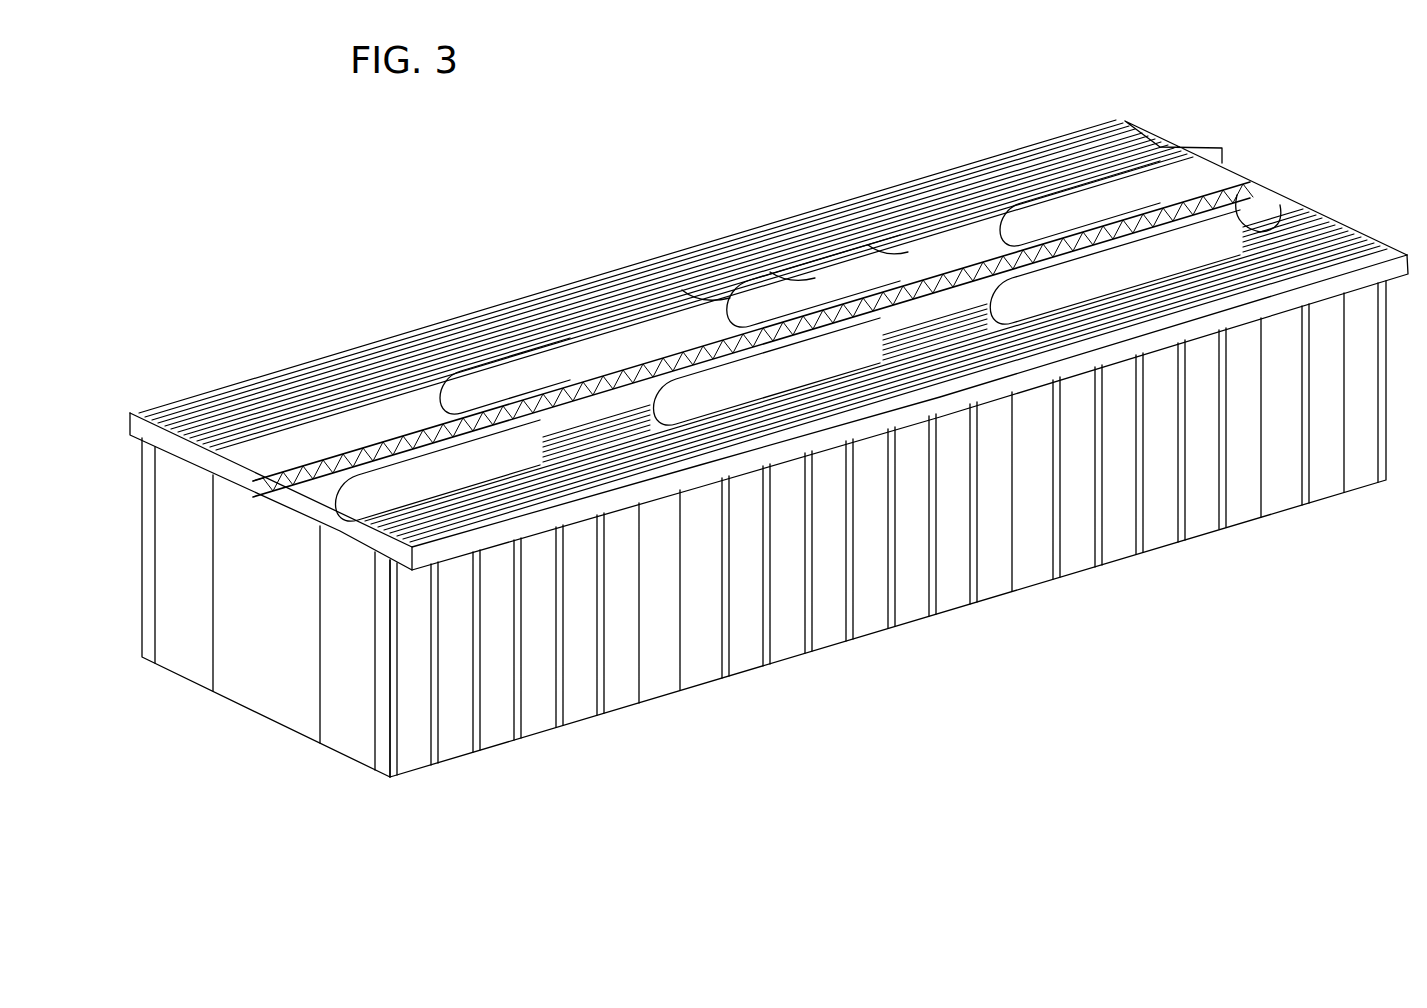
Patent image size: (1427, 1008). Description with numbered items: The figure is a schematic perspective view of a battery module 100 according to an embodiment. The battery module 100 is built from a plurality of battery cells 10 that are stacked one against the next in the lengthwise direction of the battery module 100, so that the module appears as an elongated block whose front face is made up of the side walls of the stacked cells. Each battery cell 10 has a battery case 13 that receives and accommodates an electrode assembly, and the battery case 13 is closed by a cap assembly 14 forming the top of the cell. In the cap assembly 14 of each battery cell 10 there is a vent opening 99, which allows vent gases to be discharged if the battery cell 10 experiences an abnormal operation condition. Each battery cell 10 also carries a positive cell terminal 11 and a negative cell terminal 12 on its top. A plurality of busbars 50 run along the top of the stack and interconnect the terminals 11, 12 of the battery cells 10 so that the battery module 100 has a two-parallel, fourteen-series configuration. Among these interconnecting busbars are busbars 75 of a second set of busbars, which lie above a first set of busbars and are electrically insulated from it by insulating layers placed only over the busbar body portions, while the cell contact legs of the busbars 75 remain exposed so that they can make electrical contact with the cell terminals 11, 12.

The battery module 100 is at (352, 245).
The battery cell 10 is at (1020, 568).
The battery case 13 is at (283, 645).
The cap assembly 14 is at (252, 484).
The busbar 50 is at (753, 337).
The busbar of the second set of busbars 75 is at (578, 367).
The positive cell terminal 11 is at (692, 282).
The negative cell terminal 12 is at (775, 263).
The vent opening 99 is at (1240, 203).